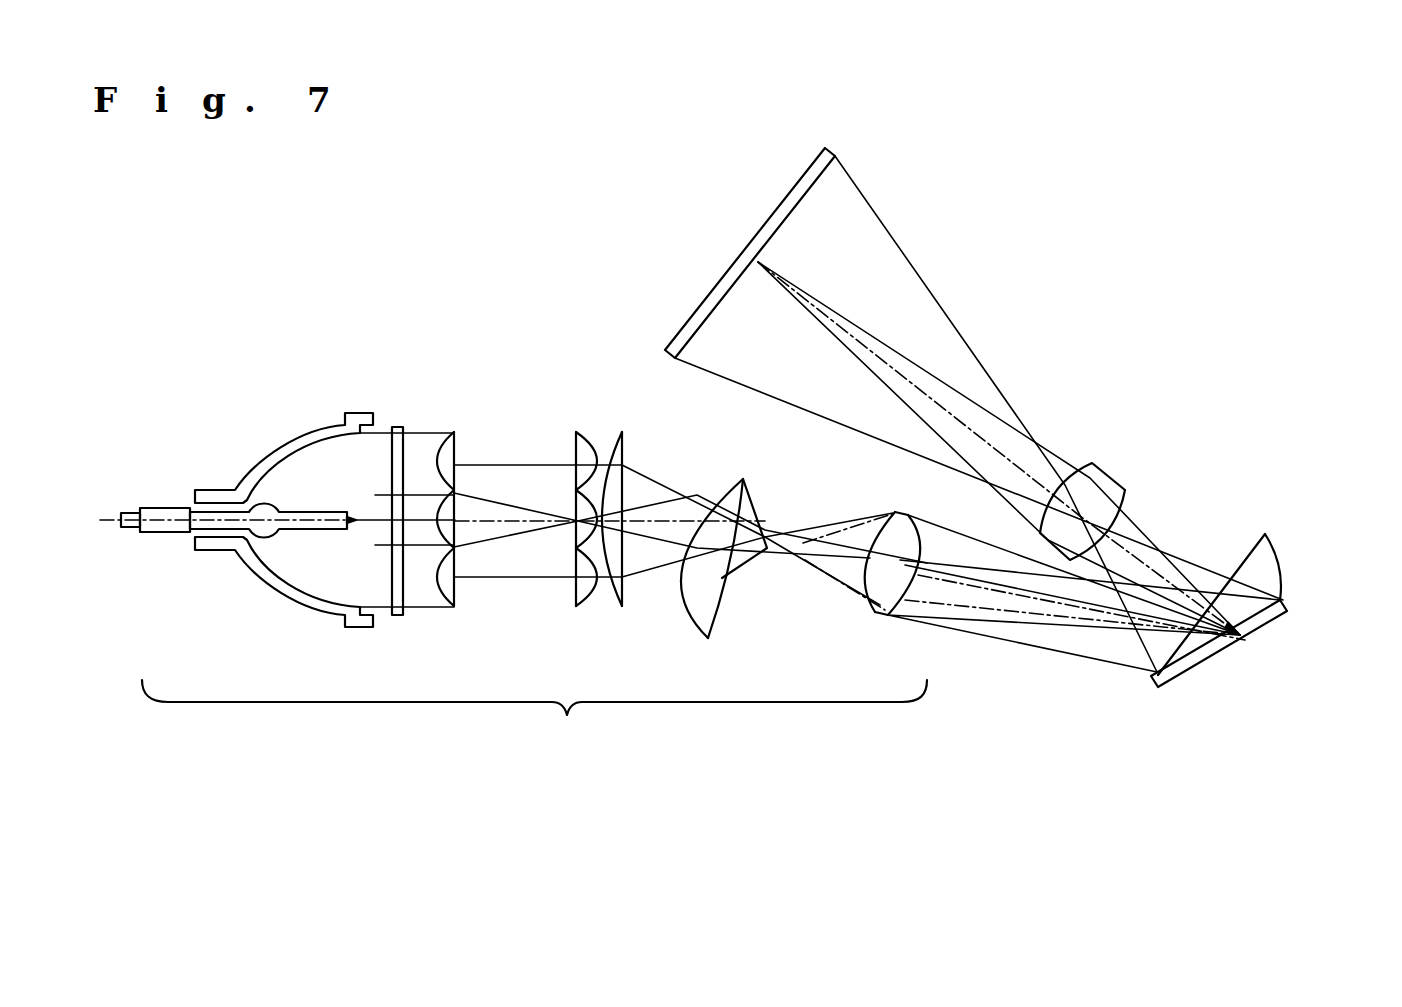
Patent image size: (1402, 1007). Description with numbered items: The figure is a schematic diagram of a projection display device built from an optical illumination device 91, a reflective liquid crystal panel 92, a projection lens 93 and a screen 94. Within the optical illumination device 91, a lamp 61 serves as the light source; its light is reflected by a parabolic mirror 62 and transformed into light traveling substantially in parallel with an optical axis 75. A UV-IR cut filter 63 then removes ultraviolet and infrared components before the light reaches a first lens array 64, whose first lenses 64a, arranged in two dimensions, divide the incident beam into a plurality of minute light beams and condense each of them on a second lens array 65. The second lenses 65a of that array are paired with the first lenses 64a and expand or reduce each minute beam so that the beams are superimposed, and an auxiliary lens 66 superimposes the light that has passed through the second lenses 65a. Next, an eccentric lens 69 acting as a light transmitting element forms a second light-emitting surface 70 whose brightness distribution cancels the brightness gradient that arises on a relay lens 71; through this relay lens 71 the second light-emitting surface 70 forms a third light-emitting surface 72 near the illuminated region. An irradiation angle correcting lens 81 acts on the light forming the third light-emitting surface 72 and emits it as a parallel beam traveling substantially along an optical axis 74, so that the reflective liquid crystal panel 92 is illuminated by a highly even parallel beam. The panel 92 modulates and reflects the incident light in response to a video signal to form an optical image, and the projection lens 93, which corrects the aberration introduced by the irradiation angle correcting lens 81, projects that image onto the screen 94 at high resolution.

The lamp 61 is at (158, 505).
The parabolic mirror 62 is at (278, 447).
The UV-IR cut filter 63 is at (392, 423).
The first lens array 64 is at (429, 507).
The first lens 64a is at (443, 598).
The second lens array 65 is at (570, 522).
The second lens 65a is at (582, 549).
The auxiliary lens 66 is at (618, 435).
The eccentric lens 69 is at (732, 478).
The second light-emitting surface 70 is at (760, 512).
The relay lens 71 is at (902, 507).
The third light-emitting surface 72 is at (1240, 682).
The optical axis 74 is at (970, 587).
The optical axis 75 is at (500, 523).
The irradiation angle correcting lens 81 is at (1268, 533).
The optical illumination device 91 is at (513, 548).
The reflective liquid crystal panel 92 is at (1255, 604).
The projection lens 93 is at (1107, 467).
The screen 94 is at (837, 153).